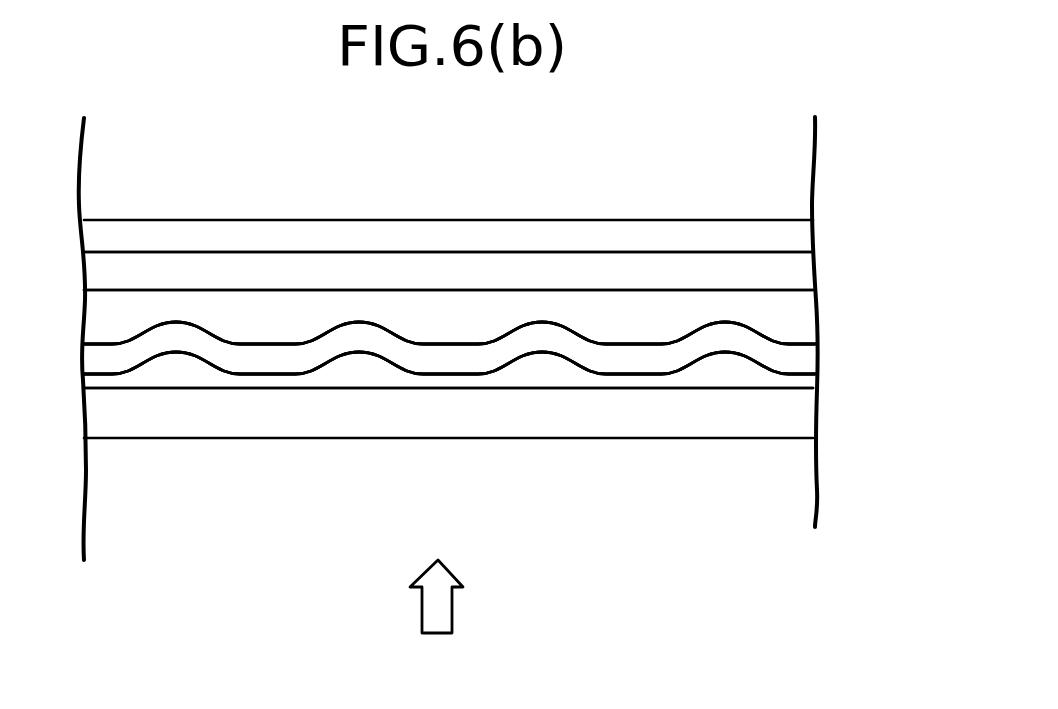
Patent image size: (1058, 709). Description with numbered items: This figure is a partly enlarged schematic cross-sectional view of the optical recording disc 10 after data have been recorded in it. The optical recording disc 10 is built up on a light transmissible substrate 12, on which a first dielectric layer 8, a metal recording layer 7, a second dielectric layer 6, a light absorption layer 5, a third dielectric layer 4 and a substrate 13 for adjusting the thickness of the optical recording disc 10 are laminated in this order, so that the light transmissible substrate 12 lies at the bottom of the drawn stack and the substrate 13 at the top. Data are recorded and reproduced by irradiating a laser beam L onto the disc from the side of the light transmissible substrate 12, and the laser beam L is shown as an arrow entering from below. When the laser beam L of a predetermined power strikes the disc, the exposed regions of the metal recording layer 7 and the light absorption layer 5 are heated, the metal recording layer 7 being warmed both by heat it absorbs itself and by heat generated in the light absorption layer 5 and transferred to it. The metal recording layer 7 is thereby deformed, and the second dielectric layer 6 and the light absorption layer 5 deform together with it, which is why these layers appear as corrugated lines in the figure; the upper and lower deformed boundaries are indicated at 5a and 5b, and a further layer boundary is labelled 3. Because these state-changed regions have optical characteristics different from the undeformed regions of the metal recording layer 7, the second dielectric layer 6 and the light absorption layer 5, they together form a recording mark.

The optical recording disc 10 is at (849, 162).
The substrate 13 is at (463, 137).
The light transmissible substrate 12 is at (464, 516).
The first layer 3 is at (790, 236).
The third dielectric layer 4 is at (795, 268).
The light absorption layer 5 is at (797, 308).
The upper corrugated surface 5a is at (147, 355).
The lower corrugated surface 5b is at (163, 375).
The second dielectric layer 6 is at (800, 353).
The metal recording layer 7 is at (805, 380).
The first dielectric layer 8 is at (798, 416).
The laser beam L is at (452, 615).